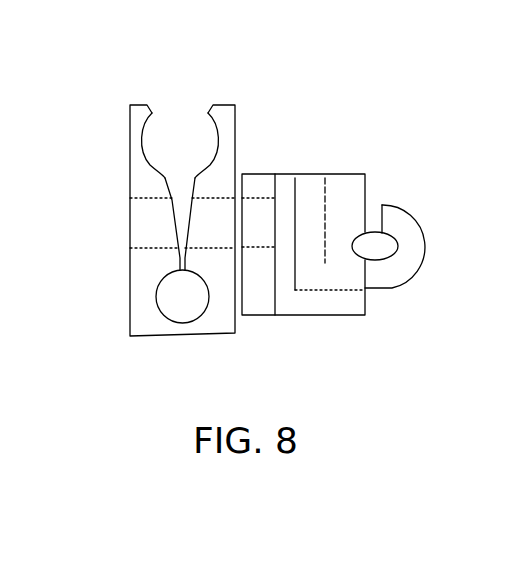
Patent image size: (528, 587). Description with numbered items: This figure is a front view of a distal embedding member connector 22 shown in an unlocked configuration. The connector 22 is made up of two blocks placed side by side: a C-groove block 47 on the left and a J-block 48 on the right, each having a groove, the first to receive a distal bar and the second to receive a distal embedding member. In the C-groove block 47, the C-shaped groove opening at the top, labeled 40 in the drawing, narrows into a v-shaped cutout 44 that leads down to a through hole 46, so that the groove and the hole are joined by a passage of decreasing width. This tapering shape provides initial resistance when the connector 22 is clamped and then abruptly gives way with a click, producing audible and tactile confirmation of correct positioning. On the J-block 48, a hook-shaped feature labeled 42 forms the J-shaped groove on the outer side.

The distal embedding member connector 22 is at (333, 112).
The keyhole slot opening 40 is at (160, 127).
The hook 42 is at (410, 266).
The v-shaped cutout 44 is at (185, 217).
The through hole 46 is at (183, 305).
The C-groove block 47 is at (117, 300).
The J-block 48 is at (348, 318).